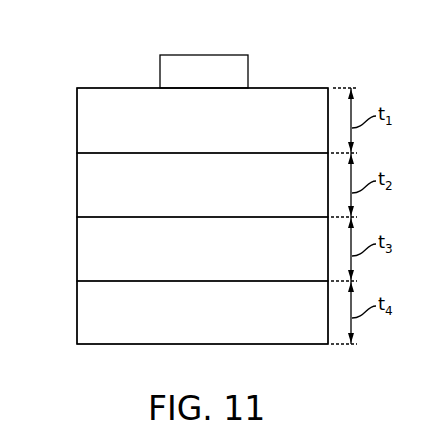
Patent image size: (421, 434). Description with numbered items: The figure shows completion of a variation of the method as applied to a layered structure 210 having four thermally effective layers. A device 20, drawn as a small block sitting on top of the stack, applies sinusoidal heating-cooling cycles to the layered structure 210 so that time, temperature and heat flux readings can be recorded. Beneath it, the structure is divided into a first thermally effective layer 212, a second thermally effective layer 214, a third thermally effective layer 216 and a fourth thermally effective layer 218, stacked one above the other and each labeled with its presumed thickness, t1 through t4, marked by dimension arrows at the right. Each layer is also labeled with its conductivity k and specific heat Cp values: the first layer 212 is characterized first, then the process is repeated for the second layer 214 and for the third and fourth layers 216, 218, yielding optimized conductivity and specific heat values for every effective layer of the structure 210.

The device 20 is at (229, 55).
The layered structure 210 is at (316, 71).
The first thermally effective layer 212 is at (77, 120).
The second thermally effective layer 214 is at (77, 185).
The third thermally effective layer 216 is at (77, 247).
The fourth thermally effective layer 218 is at (77, 310).